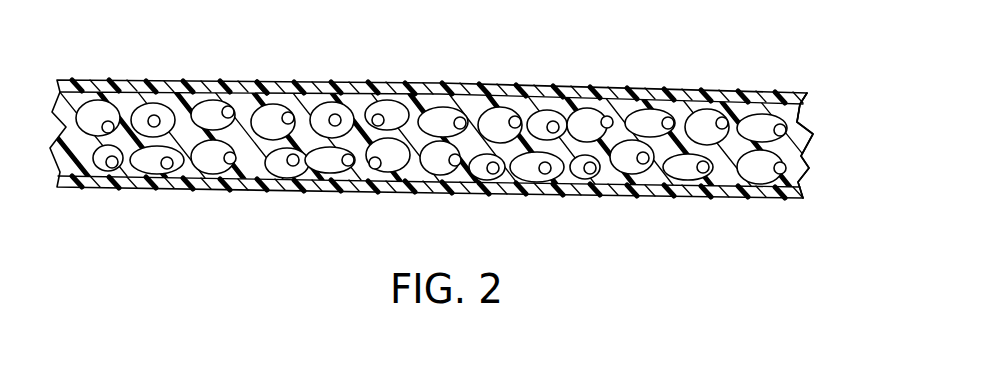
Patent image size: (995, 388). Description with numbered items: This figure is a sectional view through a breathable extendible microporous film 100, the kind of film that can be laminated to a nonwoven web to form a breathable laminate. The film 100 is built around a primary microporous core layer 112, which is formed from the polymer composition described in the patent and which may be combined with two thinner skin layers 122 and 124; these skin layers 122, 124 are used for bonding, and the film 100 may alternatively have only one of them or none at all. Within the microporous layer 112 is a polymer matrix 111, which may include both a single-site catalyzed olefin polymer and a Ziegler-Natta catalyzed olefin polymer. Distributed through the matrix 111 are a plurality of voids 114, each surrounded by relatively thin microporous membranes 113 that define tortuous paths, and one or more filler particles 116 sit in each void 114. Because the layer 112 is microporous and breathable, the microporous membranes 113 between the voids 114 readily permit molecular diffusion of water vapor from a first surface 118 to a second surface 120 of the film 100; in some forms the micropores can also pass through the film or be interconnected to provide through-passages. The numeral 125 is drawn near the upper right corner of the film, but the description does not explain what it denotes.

The breathable extendible microporous film 100 is at (805, 178).
The polymer matrix 111 is at (793, 142).
The primary microporous core layer 112 is at (750, 103).
The microporous membranes 113 is at (425, 128).
The voids 114 is at (513, 182).
The filler particles 116 is at (557, 175).
The first surface 118 is at (103, 77).
The second surface 120 is at (133, 186).
The skin layer 122 is at (252, 77).
The skin layer 124 is at (267, 185).
The corner of layer 125 is at (803, 95).